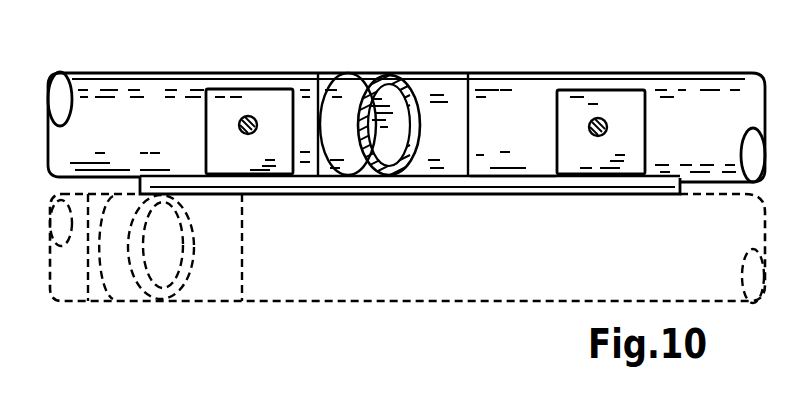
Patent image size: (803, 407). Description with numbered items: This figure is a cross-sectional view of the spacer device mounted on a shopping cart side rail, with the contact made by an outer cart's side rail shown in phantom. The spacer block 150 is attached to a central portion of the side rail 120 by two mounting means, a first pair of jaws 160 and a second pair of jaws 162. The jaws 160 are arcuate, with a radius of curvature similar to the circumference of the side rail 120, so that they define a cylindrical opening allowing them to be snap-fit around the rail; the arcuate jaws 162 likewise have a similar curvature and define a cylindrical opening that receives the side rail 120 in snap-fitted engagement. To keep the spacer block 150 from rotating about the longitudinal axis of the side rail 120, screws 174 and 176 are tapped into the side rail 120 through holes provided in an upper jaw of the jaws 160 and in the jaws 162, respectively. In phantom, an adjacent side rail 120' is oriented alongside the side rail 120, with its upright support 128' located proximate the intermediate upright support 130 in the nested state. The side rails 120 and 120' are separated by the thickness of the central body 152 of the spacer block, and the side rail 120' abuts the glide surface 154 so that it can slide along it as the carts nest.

The side rail 120 is at (405, 106).
The side rail 120' is at (407, 273).
The upright support 128' is at (134, 273).
The intermediate upright support 130 is at (370, 73).
The spacer block 150 is at (333, 178).
The central body 152 is at (495, 180).
The glide surface 154 is at (458, 193).
The first pair of jaws 160 is at (247, 95).
The second pair of jaws 162 is at (562, 97).
The screw 174 is at (255, 118).
The screw 176 is at (602, 120).